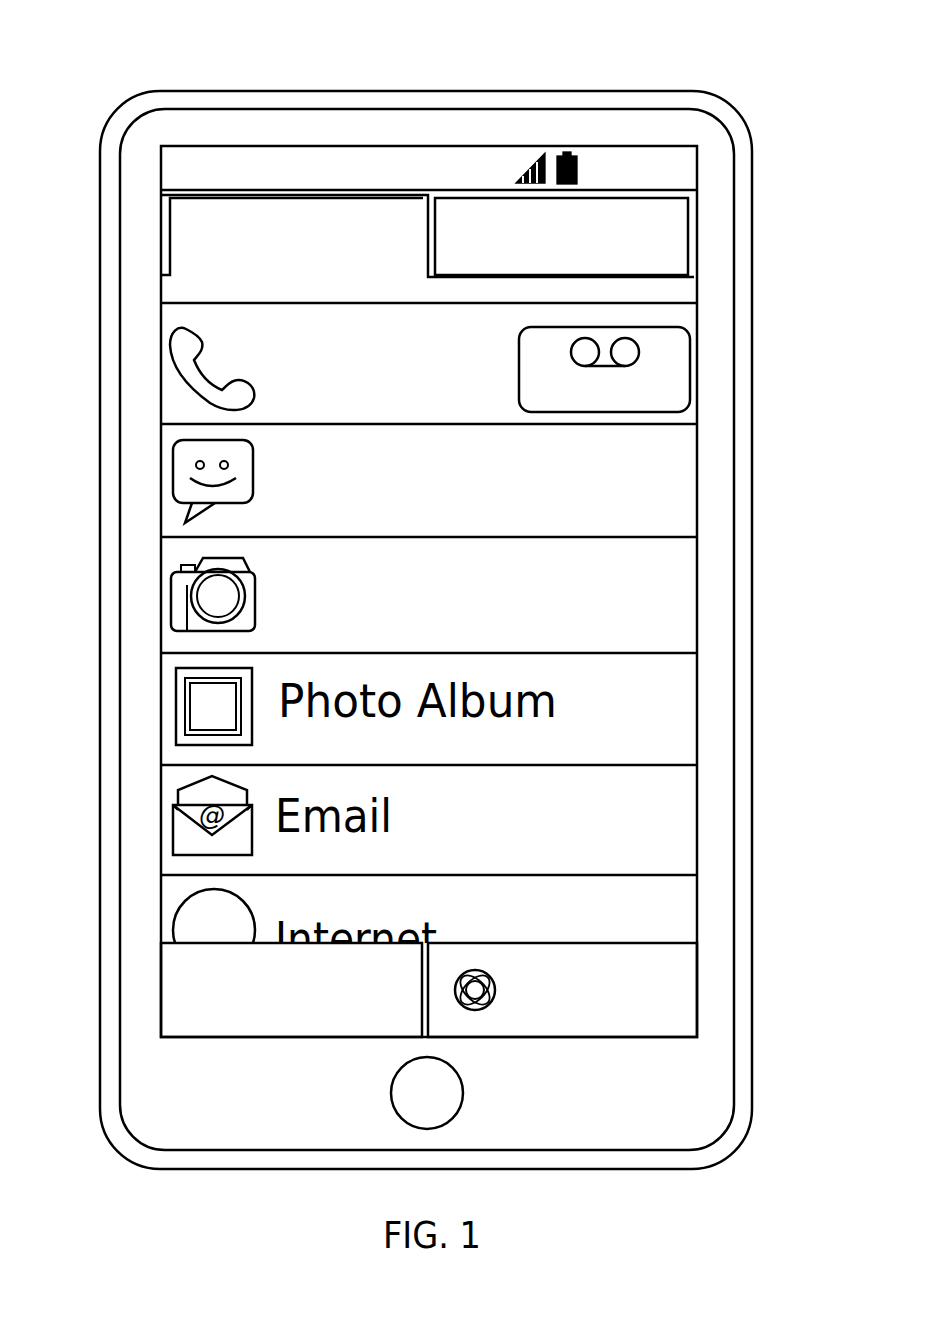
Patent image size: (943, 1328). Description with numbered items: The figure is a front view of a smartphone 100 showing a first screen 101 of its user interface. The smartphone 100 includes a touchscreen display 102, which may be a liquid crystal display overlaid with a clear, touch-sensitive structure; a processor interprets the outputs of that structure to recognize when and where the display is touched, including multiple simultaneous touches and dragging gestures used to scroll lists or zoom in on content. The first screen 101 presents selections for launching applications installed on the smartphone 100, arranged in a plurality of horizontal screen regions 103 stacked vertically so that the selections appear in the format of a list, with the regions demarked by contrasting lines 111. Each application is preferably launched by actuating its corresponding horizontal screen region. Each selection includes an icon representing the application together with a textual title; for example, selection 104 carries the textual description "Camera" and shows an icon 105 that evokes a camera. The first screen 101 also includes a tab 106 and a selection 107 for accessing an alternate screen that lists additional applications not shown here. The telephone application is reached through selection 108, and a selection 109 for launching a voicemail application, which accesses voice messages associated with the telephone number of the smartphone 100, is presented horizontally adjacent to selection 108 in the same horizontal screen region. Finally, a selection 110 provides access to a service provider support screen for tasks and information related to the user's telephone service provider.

The smartphone 100 is at (228, 42).
The first screen 101 is at (461, 158).
The touchscreen display 102 is at (718, 435).
The horizontal screen regions 103 is at (165, 558).
The selection 104 is at (170, 572).
The icon 105 is at (178, 613).
The tab 106 is at (188, 228).
The selection 107 is at (185, 974).
The selection 108 is at (188, 393).
The selection 109 is at (663, 358).
The selection 110 is at (668, 990).
The lines 111 is at (667, 765).